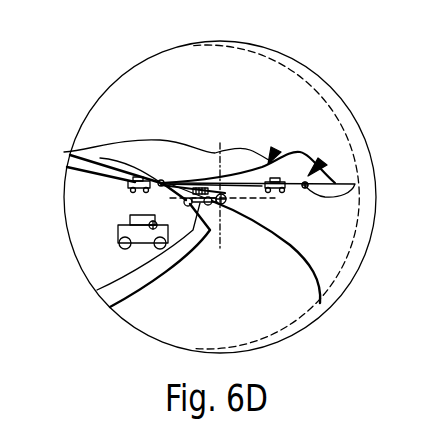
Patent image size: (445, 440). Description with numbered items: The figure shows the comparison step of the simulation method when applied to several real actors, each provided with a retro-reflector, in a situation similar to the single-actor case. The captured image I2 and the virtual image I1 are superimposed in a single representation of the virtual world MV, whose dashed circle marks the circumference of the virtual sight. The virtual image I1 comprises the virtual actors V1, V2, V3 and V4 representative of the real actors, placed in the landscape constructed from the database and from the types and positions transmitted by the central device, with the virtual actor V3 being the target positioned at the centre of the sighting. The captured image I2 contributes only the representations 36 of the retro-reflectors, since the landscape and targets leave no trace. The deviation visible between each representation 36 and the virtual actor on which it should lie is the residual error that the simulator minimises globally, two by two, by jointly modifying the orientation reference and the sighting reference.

The virtual world MV is at (96, 118).
The representation of the retro-reflector 36 is at (70, 153).
The virtual actor V1 is at (118, 232).
The virtual actor V2 is at (130, 185).
The virtual actor V3 is at (97, 290).
The virtual actor V4 is at (275, 194).
The virtual image I1 is at (276, 148).
The captured image I2 is at (323, 162).